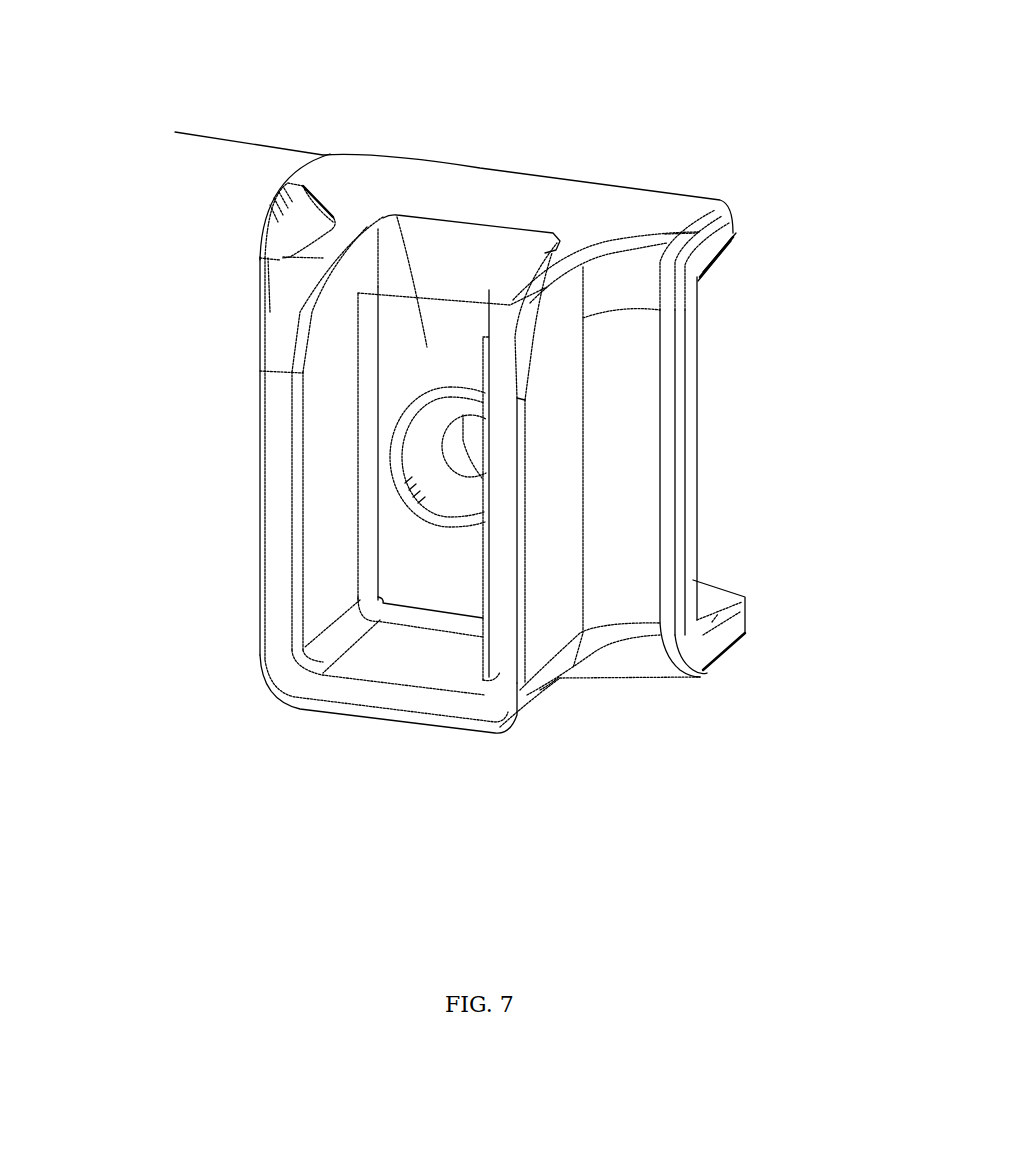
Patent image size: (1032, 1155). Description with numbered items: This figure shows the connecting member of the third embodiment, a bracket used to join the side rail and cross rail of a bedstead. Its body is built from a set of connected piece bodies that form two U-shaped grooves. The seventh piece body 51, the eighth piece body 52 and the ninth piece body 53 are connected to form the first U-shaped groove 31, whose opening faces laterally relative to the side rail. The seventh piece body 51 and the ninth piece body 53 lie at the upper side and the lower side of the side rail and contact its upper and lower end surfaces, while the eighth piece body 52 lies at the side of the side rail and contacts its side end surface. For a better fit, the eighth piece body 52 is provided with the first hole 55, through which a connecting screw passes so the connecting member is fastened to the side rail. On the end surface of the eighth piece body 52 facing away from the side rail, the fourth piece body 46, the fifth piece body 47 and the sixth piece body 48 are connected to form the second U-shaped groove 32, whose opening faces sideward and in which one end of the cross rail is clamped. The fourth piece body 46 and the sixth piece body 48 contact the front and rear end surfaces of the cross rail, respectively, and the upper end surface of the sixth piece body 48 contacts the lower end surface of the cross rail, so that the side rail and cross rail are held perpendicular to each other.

The second U-shaped groove 32 is at (427, 347).
The seventh piece body 51 is at (677, 215).
The first U-shaped groove 31 is at (707, 435).
The first hole 55 is at (478, 430).
The fourth piece body 46 is at (317, 565).
The fifth piece body 47 is at (407, 693).
The ninth piece body 53 is at (713, 593).
The eighth piece body 52 is at (637, 597).
The sixth piece body 48 is at (540, 637).